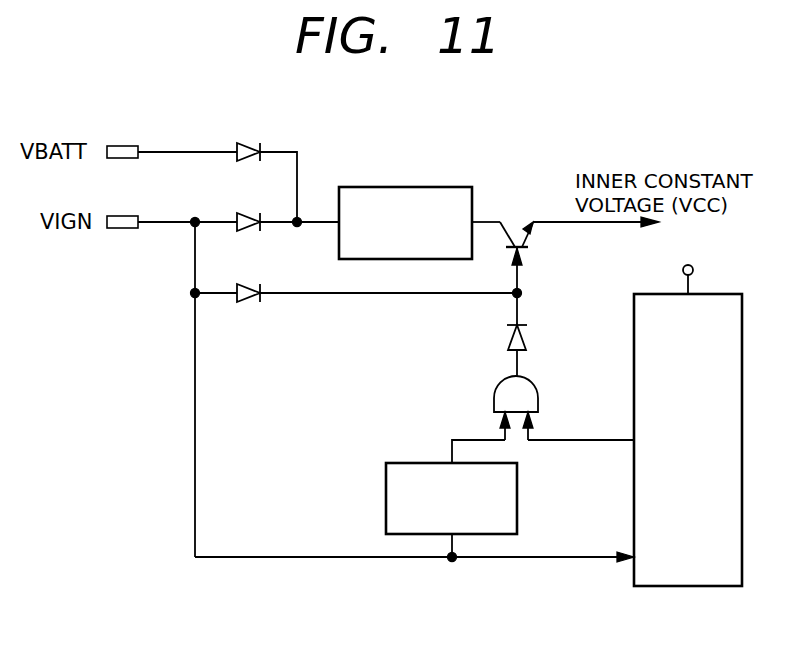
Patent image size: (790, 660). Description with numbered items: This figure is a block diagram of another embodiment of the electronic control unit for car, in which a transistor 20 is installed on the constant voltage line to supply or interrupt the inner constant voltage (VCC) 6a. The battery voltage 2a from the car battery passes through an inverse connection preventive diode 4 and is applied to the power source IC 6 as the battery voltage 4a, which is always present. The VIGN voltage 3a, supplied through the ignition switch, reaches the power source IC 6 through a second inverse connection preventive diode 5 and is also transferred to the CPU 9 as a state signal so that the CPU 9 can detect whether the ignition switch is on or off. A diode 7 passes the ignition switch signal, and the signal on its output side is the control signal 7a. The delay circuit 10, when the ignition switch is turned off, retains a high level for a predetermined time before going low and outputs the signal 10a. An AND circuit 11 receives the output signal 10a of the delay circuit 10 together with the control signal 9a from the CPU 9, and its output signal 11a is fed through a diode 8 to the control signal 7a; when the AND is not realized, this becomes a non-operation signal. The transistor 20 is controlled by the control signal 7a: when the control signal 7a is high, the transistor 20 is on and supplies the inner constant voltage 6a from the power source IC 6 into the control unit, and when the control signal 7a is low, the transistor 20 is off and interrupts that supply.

The battery voltage 2a is at (150, 152).
The VIGN voltage 3a is at (150, 222).
The inverse connection preventive diode 4 is at (243, 143).
The battery voltage 4a is at (300, 215).
The inverse connection preventive diode 5 is at (243, 213).
The power source IC 6 is at (412, 187).
The inner constant voltage (VCC) 6a is at (487, 221).
The diode 7 is at (243, 284).
The control signal 7a is at (525, 291).
The diode 8 is at (528, 334).
The CPU 9 is at (723, 294).
The control signal 9a is at (600, 438).
The delay circuit 10 is at (386, 503).
The output signal 10a is at (463, 438).
The AND circuit 11 is at (540, 400).
The output signal 11a is at (522, 364).
The transistor 20 is at (530, 216).